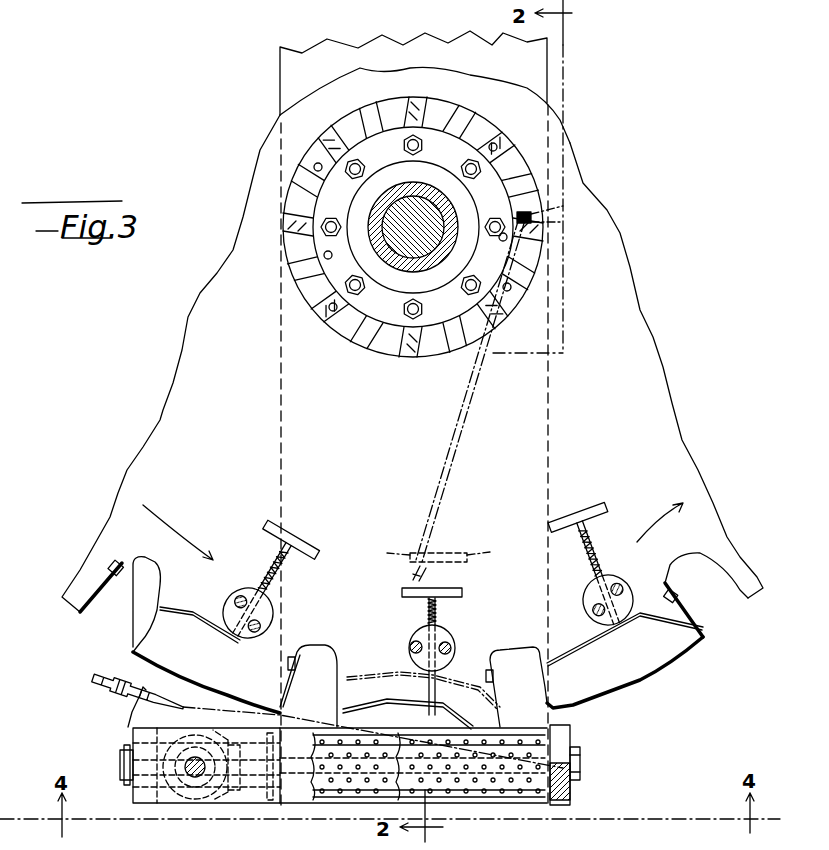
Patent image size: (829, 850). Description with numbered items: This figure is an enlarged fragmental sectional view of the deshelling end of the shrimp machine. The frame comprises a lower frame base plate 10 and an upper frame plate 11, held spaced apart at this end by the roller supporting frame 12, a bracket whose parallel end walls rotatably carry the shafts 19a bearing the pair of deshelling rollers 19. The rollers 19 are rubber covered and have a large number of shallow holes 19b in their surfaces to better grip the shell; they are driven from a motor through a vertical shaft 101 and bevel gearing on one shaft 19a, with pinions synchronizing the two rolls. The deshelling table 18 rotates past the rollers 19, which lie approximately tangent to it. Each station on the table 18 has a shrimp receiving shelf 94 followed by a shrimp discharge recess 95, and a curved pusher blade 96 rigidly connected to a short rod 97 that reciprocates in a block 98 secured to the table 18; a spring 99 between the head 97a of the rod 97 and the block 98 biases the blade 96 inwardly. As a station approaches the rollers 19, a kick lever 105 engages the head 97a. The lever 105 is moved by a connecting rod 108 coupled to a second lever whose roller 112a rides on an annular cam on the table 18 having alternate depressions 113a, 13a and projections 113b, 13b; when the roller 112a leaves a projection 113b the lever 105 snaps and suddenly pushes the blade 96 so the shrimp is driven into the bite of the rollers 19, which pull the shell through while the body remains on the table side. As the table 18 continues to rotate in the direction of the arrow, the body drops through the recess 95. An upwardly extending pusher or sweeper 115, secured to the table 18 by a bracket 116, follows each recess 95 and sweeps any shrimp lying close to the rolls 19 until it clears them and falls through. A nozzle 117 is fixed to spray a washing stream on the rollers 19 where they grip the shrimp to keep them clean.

The lower frame base plate 10 is at (280, 77).
The upper frame plate 11 is at (238, 843).
The roller supporting frame 12 is at (143, 791).
The depressions of annular cam 13a is at (390, 208).
The projections of annular cam 13b is at (370, 253).
The deshelling table 18 is at (147, 448).
The deshelling rollers 19 is at (337, 752).
The roller shafts 19a is at (581, 764).
The shallow holes 19b is at (522, 765).
The shrimp receiving shelf 94 is at (418, 683).
The shrimp discharge recess 95 is at (429, 640).
The pusher blade 96 is at (200, 626).
The rod 97 is at (287, 563).
The head 97a is at (293, 541).
The block 98 is at (232, 602).
The spring 99 is at (281, 585).
The shaft 101 is at (140, 844).
The kick lever 105 is at (415, 580).
The connecting rod 108 is at (450, 463).
The roller 112a is at (533, 217).
The depressions 113a is at (512, 214).
The projections 113b is at (434, 322).
The pusher or sweeper 115 is at (80, 605).
The bracket 116 is at (113, 566).
The nozzle 117 is at (116, 708).